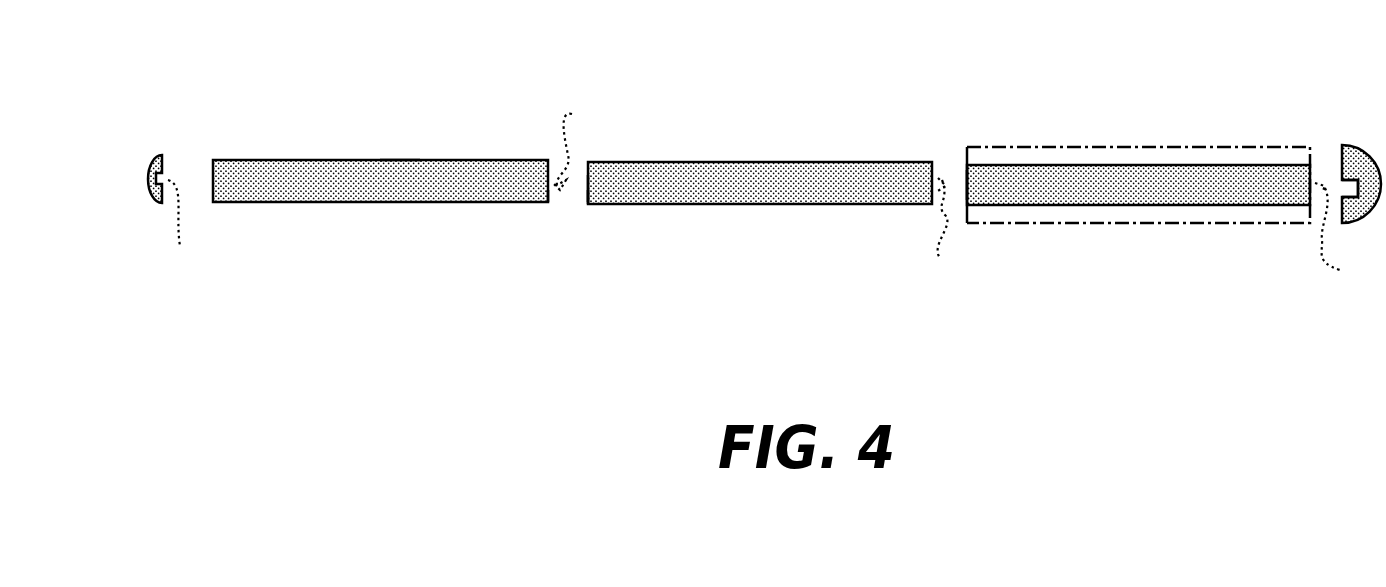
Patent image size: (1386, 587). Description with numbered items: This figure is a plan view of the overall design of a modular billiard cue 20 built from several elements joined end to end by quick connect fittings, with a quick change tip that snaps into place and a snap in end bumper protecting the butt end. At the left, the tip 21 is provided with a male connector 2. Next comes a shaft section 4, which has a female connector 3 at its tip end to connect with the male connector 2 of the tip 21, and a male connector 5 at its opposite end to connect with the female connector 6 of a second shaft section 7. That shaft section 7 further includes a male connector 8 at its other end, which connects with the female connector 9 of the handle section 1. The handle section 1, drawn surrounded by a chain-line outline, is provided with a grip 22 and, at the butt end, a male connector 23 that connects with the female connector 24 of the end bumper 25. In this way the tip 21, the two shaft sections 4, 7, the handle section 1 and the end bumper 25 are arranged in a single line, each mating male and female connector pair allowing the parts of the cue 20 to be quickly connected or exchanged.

The handle section 1 is at (1197, 165).
The male connector 2 is at (184, 228).
The female connector 3 is at (213, 177).
The shaft section 4 is at (397, 160).
The male connector 5 is at (571, 145).
The female connector 6 is at (588, 190).
The shaft section 7 is at (787, 163).
The male connector 8 is at (944, 229).
The female connector 9 is at (967, 183).
The cue 20 is at (555, 227).
The tip 21 is at (160, 157).
The grip 22 is at (1005, 152).
The male connector 23 is at (1347, 235).
The female connector 24 is at (1350, 188).
The end bumper 25 is at (1365, 150).